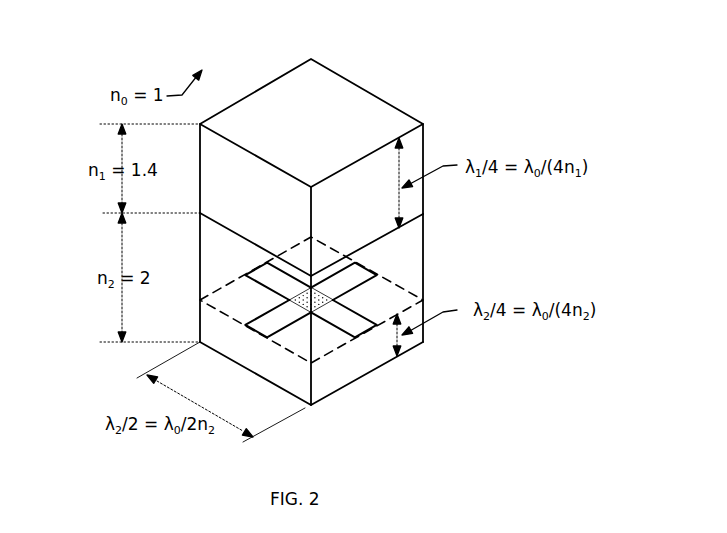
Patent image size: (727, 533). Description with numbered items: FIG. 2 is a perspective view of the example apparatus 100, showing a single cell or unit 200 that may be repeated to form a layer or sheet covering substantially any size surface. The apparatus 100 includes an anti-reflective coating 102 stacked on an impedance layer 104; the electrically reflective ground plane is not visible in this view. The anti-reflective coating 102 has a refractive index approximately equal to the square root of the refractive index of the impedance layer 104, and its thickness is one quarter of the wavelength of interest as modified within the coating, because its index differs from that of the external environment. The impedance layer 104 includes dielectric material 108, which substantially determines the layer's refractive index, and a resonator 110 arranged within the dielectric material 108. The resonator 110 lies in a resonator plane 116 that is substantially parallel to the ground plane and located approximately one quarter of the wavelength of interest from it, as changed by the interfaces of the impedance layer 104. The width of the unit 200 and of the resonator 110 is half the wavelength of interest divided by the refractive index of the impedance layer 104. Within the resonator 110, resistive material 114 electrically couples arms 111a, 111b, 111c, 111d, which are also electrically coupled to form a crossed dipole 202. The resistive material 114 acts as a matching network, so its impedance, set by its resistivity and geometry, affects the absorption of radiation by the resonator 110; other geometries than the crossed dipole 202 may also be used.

The apparatus 100 is at (232, 68).
The unit 200 is at (432, 52).
The anti-reflective coating 102 is at (415, 148).
The impedance layer 104 is at (423, 215).
The dielectric material 108 is at (208, 252).
The resonator 110 is at (302, 285).
The arm 111a is at (353, 330).
The arm 111b is at (358, 286).
The arm 111c is at (273, 322).
The arm 111d is at (255, 278).
The resistive material 114 is at (300, 314).
The resonator plane 116 is at (388, 278).
The crossed dipole 202 is at (338, 301).